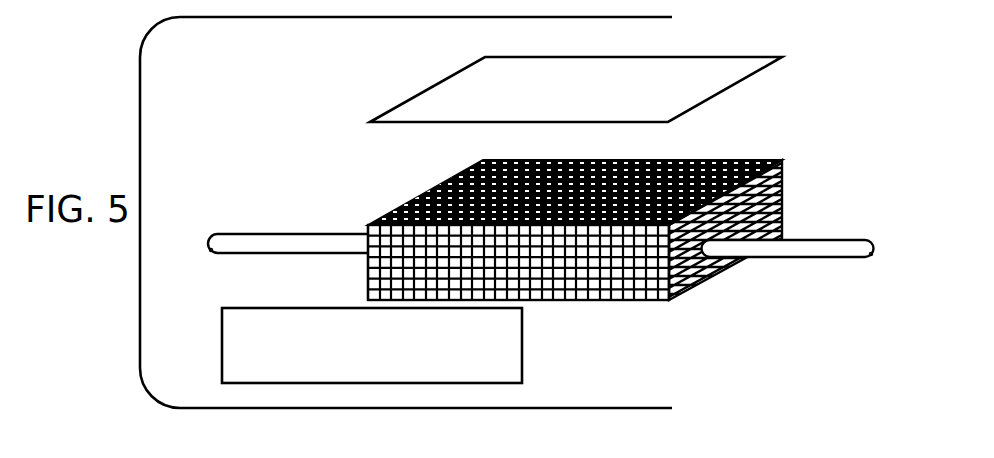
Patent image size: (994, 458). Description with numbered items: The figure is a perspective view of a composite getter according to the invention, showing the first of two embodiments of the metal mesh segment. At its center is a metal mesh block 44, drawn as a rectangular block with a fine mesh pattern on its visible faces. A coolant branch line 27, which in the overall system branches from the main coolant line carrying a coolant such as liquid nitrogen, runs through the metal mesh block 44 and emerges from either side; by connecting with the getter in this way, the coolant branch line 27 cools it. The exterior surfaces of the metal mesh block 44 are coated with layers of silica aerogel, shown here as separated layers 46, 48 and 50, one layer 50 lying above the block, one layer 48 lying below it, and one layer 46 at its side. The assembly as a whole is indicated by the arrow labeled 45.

The silica aerogel layer 50 is at (600, 70).
The silica aerogel layer 46 is at (777, 192).
The coolant branch line 27 is at (833, 238).
The metal mesh block 44 is at (625, 293).
The heat exchanger assembly 45 is at (614, 271).
The silica aerogel layer 48 is at (238, 363).